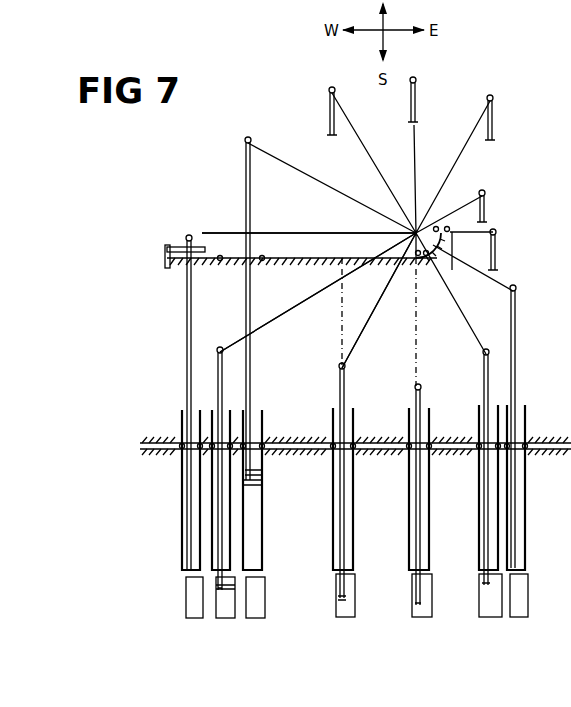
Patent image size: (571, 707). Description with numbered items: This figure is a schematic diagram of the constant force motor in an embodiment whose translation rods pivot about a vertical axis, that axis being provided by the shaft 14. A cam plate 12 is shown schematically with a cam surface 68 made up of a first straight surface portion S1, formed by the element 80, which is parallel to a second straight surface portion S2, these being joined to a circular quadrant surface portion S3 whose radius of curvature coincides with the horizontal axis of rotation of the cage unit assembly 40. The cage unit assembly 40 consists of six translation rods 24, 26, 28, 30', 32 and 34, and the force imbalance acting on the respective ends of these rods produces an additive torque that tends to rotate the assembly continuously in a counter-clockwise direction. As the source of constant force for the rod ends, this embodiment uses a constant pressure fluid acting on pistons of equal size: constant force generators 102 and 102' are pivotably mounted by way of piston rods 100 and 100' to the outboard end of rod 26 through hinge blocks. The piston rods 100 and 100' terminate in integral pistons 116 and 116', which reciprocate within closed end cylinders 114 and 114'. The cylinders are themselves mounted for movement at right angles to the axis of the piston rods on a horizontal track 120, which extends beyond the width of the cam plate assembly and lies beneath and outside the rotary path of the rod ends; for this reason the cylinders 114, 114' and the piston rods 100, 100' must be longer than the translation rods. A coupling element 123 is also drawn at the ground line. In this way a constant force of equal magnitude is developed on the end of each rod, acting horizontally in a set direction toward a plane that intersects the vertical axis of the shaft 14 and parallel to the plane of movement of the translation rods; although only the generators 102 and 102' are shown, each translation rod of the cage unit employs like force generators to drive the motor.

The cam plate 12 is at (172, 270).
The shaft 14 is at (412, 232).
The translation rod 24 is at (415, 89).
The translation rod 26 is at (334, 101).
The translation rod 28 is at (252, 152).
The translation rod 30' is at (309, 223).
The translation rod 32 is at (268, 324).
The translation rod 34 is at (353, 344).
The cage unit assembly 40 is at (419, 211).
The cam surface 68 is at (262, 262).
The first surface portion former 80 is at (176, 248).
The piston rod 100 is at (284, 473).
The piston rod 100' is at (484, 445).
The constant force generator 102 is at (294, 509).
The constant force generator 102' is at (488, 500).
The closed end cylinder 114 is at (280, 488).
The closed end cylinder 114' is at (482, 477).
The piston 116 is at (284, 546).
The piston 116' is at (486, 579).
The horizontal track 120 is at (438, 455).
The coupling 123 is at (250, 456).
The first surface portion S1 is at (196, 245).
The second surface portion S2 is at (318, 257).
The circular quadrant surface portion S3 is at (437, 222).